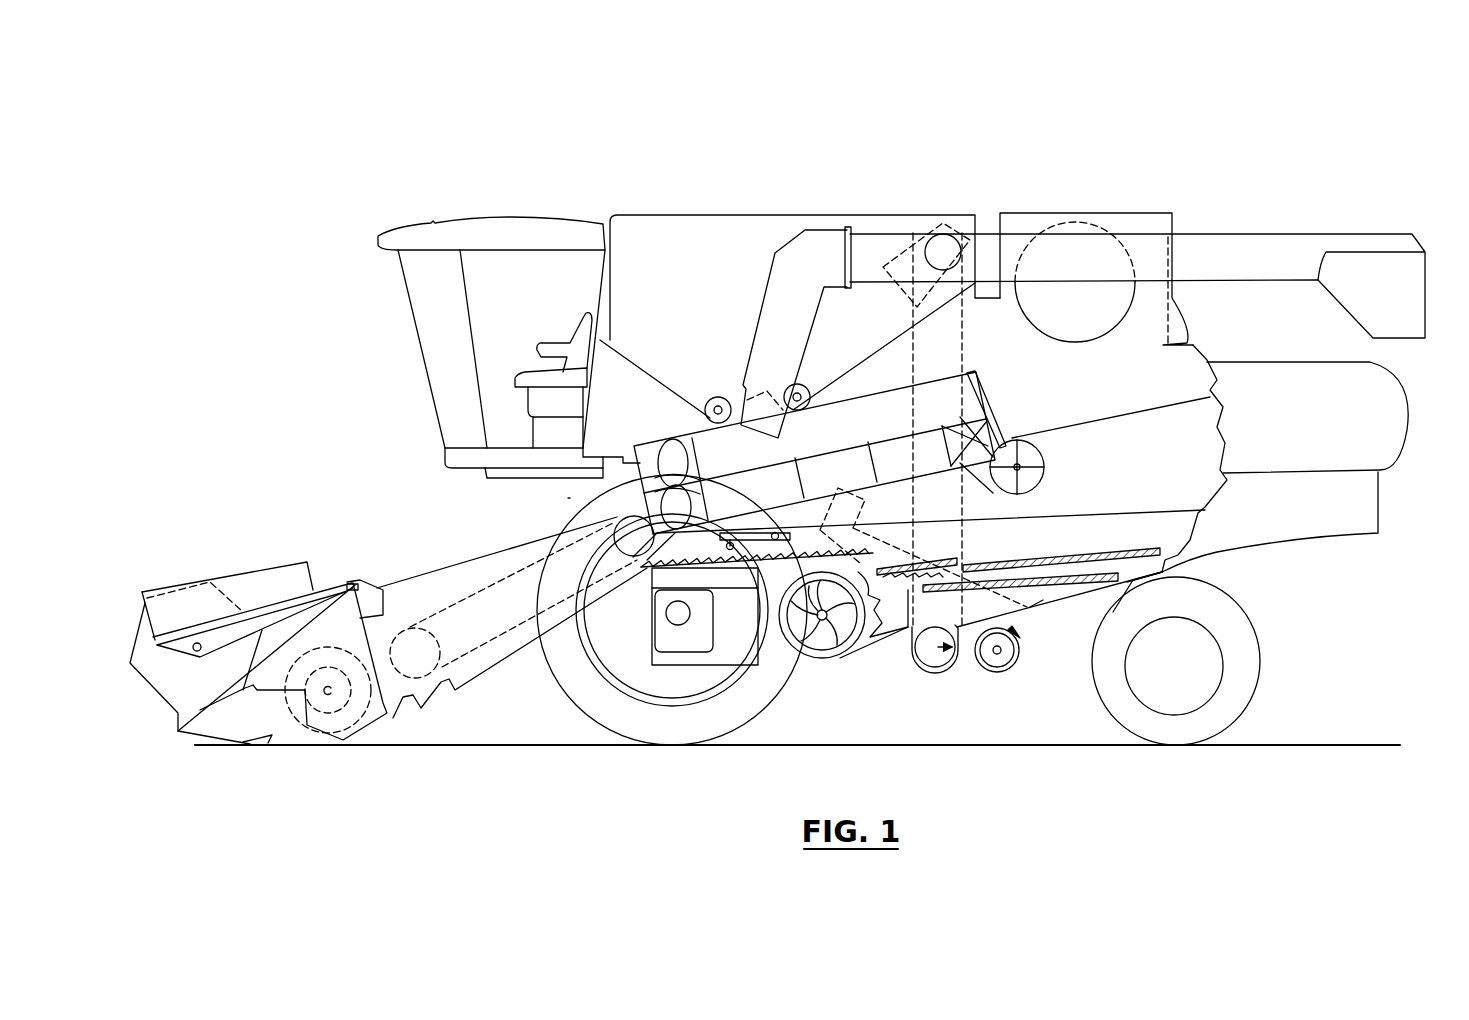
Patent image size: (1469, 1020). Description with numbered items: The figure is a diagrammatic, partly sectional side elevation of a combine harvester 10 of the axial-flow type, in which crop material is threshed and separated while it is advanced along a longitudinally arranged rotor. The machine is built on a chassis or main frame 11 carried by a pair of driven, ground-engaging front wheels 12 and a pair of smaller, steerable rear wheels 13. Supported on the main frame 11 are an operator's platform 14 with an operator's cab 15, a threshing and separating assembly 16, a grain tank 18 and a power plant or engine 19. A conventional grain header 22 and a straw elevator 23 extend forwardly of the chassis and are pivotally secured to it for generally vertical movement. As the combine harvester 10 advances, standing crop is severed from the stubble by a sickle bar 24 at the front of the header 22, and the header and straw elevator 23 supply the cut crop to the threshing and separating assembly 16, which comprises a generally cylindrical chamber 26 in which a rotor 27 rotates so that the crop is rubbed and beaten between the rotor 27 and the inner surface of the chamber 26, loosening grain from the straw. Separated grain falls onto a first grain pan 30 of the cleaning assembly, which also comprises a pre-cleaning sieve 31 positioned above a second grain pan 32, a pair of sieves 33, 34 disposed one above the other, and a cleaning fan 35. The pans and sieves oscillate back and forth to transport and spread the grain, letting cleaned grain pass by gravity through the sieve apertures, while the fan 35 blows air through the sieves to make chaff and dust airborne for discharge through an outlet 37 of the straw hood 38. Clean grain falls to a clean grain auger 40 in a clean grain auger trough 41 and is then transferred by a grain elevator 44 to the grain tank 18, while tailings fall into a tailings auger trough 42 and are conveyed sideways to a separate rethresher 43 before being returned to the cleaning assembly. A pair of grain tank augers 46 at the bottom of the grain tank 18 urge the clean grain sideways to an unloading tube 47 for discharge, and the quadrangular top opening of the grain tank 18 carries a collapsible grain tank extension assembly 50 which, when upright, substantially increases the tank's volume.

The combine harvester 10 is at (438, 188).
The main frame 11 is at (1178, 568).
The front wheels 12 is at (560, 690).
The rear wheels 13 is at (1236, 707).
The operator's platform 14 is at (455, 464).
The operator's cab 15 is at (420, 339).
The threshing and separating assembly 16 is at (568, 498).
The grain tank 18 is at (712, 222).
The engine 19 is at (1083, 215).
The grain header 22 is at (191, 565).
The straw elevator 23 is at (426, 586).
The sickle bar 24 is at (259, 748).
The chamber 26 is at (881, 400).
The rotor 27 is at (650, 510).
The first grain pan 30 is at (651, 590).
The pre-cleaning sieve 31 is at (973, 556).
The second grain pan 32 is at (905, 640).
The sieve 33 is at (1070, 588).
The sieve 34 is at (1043, 588).
The cleaning fan 35 is at (830, 660).
The outlet 37 is at (1280, 558).
The straw hood 38 is at (1390, 404).
The clean grain auger 40 is at (935, 668).
The clean grain auger trough 41 is at (910, 660).
The tailings auger trough 42 is at (1007, 672).
The rethresher 43 is at (985, 670).
The grain elevator 44 is at (965, 348).
The grain tank augers 46 is at (713, 396).
The unloading tube 47 is at (1240, 240).
The grain tank extension assembly 50 is at (760, 198).